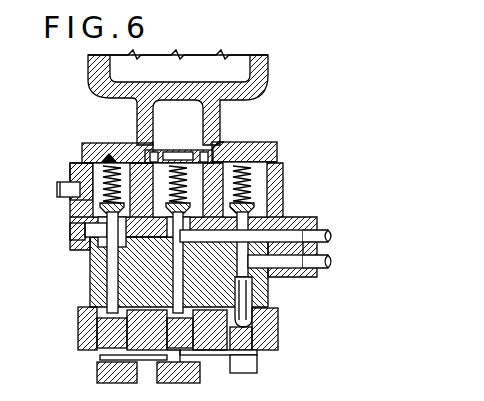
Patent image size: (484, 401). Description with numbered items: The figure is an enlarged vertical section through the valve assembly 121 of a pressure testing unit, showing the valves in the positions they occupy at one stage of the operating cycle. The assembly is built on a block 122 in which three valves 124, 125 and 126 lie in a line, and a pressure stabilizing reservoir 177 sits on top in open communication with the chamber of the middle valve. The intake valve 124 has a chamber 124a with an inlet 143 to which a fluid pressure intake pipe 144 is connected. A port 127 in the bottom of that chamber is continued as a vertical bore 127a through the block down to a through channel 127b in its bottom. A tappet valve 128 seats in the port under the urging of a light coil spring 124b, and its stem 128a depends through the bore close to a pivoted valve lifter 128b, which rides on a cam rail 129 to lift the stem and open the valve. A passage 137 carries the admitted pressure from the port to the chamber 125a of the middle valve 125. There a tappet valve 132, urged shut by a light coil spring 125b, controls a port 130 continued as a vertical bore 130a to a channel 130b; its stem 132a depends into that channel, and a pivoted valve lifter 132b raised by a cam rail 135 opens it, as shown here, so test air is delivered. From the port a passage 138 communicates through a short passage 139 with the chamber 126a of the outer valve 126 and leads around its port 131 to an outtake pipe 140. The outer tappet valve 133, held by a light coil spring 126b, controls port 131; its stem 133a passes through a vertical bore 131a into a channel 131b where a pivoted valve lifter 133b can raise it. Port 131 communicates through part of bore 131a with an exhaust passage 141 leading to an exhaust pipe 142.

The valve assembly 121 is at (58, 82).
The pressure stabilizing reservoir 177 is at (270, 74).
The valve 124 is at (80, 139).
The valve chamber 124a is at (87, 160).
The light coil spring 124b is at (107, 157).
The valve 125 is at (180, 140).
The valve chamber 125a is at (203, 170).
The light coil spring 125b is at (195, 150).
The valve 126 is at (283, 157).
The valve chamber 126a is at (283, 167).
The light coil spring 126b is at (267, 148).
The inlet 143 is at (78, 172).
The fluid pressure intake pipe 144 is at (57, 190).
The tappet valve 128 is at (103, 207).
The port 127 is at (100, 220).
The block 122 is at (69, 247).
The passage 137 is at (118, 243).
The vertical bore 127a is at (113, 270).
The valve stem 128a is at (112, 288).
The vertical bore 130a is at (180, 297).
The valve stem 132a is at (100, 315).
The pivoted valve lifter 128b is at (100, 338).
The through channel 127b is at (100, 352).
The cam rail 129 is at (95, 372).
The tappet valve 132 is at (176, 240).
The port 130 is at (190, 252).
The pivoted valve lifter 132b is at (173, 367).
The cam rail 135 is at (180, 345).
The channel 130b is at (212, 347).
The short passage 139 is at (262, 176).
The tappet valve 133 is at (245, 188).
The port 131 is at (257, 213).
The passage 138 is at (284, 235).
The outtake pipe 140 is at (330, 237).
The exhaust passage 141 is at (320, 247).
The exhaust pipe 142 is at (330, 263).
The vertical bore 131a is at (270, 288).
The valve stem 133a is at (247, 297).
The channel 131b is at (263, 323).
The pivoted valve lifter 133b is at (265, 335).